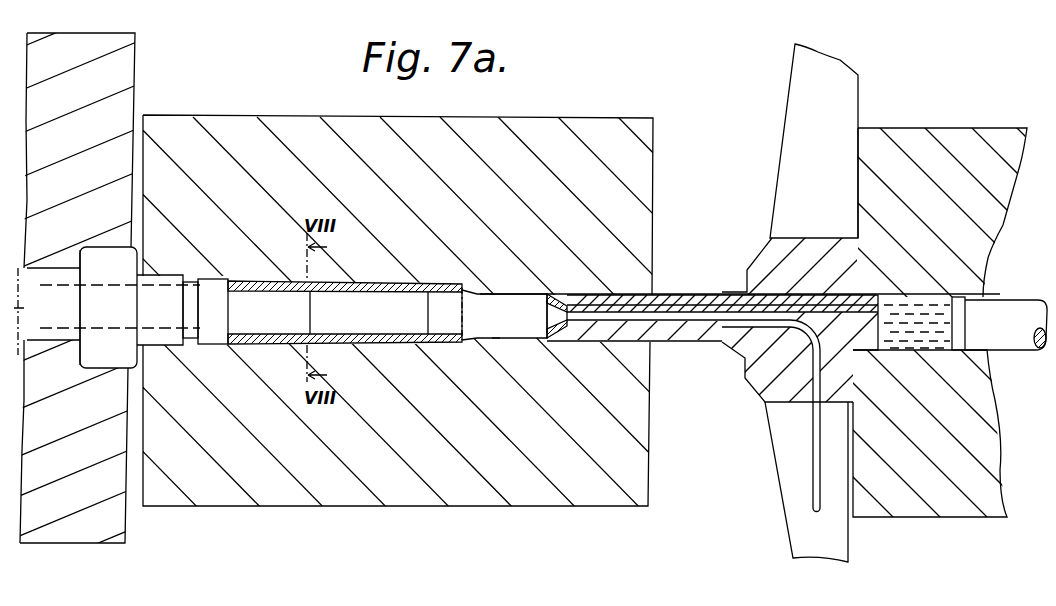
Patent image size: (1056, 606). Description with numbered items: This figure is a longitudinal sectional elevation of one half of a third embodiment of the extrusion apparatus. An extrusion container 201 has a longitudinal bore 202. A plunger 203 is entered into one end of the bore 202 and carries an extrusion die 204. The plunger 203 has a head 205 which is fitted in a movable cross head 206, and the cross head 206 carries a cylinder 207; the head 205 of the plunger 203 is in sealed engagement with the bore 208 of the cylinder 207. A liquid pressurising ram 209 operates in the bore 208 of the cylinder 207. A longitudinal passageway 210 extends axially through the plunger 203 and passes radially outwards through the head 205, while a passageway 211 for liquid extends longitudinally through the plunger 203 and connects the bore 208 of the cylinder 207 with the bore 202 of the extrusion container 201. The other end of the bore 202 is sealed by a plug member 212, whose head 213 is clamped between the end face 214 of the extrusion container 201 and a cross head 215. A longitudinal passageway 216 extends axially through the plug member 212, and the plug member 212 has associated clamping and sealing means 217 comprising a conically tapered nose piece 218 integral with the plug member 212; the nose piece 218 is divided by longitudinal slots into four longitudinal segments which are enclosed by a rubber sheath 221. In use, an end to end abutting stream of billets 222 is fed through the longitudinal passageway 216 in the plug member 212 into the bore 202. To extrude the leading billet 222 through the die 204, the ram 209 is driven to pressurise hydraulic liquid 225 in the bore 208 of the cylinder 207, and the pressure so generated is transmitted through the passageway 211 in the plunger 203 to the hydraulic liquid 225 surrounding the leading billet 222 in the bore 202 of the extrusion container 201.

The extrusion container 201 is at (337, 497).
The longitudinal bore 202 is at (498, 279).
The plunger 203 is at (668, 323).
The extrusion die 204 is at (562, 342).
The head 205 is at (763, 260).
The movable cross head 206 is at (788, 163).
The cylinder 207 is at (998, 172).
The bore 208 is at (903, 292).
The liquid pressurising ram 209 is at (1017, 310).
The longitudinal passageway 210 is at (716, 325).
The passageway for liquid 211 is at (672, 298).
The plug member 212 is at (164, 342).
The head 213 is at (82, 357).
The end face 214 is at (133, 358).
The cross head 215 is at (107, 528).
The longitudinal passageway 216 is at (160, 284).
The clamping and sealing means 217 is at (350, 348).
The conically tapered nose piece 218 is at (244, 338).
The rubber sheath 221 is at (403, 338).
The billets 222 is at (528, 302).
The hydraulic liquid 225 is at (496, 340).